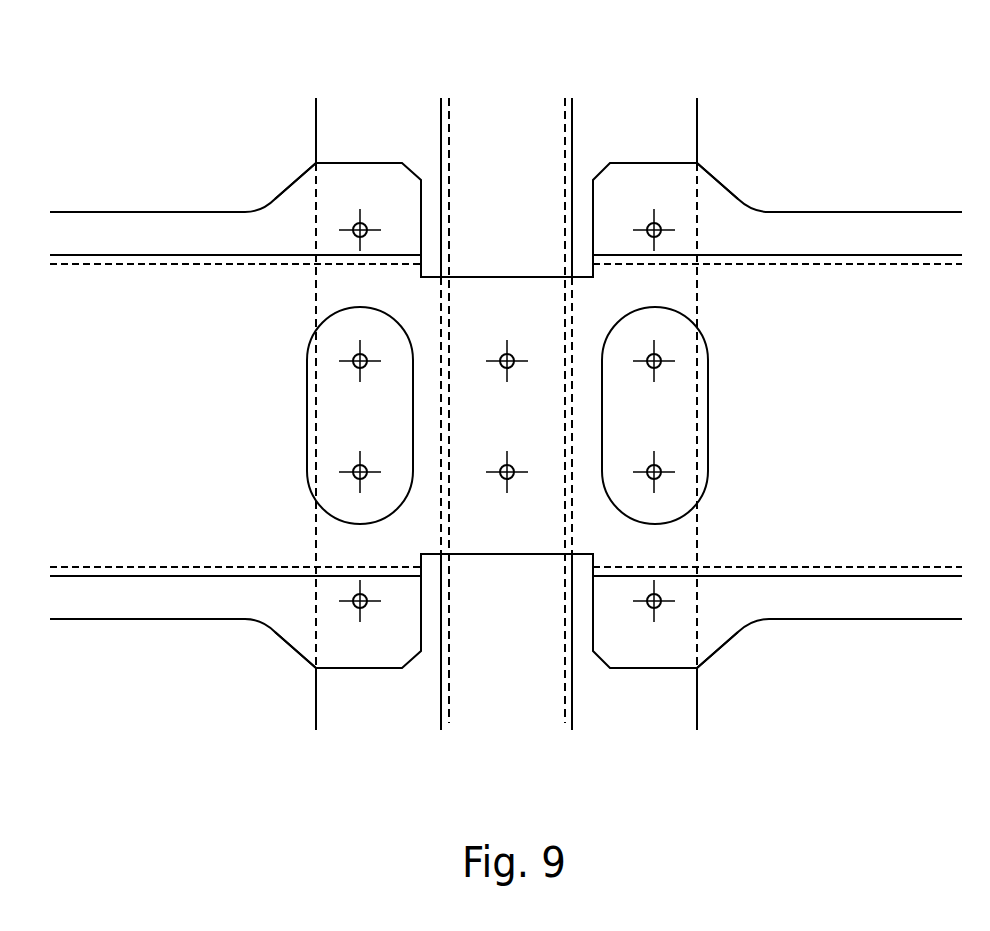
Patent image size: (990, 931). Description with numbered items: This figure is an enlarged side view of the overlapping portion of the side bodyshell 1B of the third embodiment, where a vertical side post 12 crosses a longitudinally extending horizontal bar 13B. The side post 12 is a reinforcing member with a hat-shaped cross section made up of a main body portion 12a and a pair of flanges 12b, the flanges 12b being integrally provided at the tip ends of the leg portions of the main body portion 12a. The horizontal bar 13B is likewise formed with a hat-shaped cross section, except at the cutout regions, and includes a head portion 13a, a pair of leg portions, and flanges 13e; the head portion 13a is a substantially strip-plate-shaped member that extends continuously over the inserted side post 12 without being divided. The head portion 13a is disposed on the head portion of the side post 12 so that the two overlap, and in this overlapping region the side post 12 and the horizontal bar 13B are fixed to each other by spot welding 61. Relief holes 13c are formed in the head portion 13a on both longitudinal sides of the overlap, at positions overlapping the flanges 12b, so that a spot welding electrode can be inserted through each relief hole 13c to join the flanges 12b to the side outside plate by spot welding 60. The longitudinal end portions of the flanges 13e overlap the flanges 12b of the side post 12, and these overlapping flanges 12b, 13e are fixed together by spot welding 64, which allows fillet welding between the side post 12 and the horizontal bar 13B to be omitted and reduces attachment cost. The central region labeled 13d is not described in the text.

The side bodyshell 1B is at (889, 125).
The side post 12 is at (517, 118).
The main body portion 12a is at (508, 707).
The flanges 12b is at (378, 707).
The horizontal bar 13B is at (927, 230).
The head portion 13a is at (175, 560).
The relief holes 13c is at (328, 428).
The central portion of bracket 13d is at (490, 423).
The flanges 13e is at (298, 208).
The spot welding 60 is at (352, 463).
The spot welding 61 is at (520, 467).
The spot welding 64 is at (353, 224).